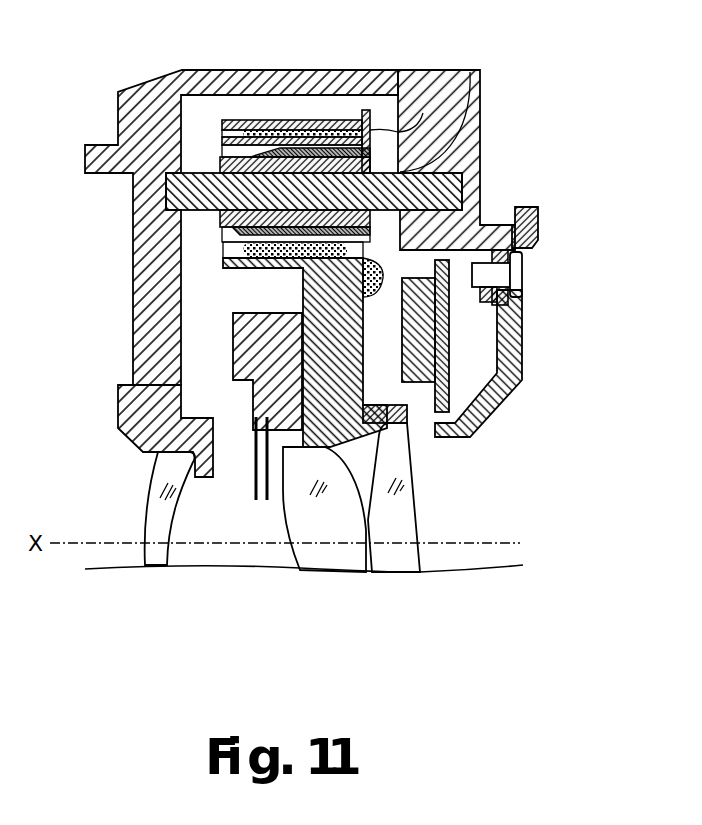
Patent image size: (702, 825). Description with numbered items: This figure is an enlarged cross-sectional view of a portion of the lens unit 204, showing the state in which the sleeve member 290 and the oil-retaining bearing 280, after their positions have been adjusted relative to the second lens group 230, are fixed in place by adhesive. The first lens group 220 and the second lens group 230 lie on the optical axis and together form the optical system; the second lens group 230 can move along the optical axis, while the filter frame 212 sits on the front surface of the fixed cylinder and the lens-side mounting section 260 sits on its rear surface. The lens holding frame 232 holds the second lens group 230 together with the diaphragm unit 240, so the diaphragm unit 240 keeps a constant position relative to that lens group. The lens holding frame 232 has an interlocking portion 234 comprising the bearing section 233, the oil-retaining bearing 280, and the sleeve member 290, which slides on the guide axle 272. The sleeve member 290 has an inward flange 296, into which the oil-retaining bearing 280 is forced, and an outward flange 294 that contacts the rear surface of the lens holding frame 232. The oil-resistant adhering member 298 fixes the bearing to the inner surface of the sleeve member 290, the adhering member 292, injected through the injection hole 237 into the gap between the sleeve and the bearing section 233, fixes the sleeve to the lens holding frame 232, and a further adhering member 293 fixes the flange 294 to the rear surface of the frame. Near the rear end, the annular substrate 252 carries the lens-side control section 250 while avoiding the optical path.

The lens unit 204 is at (68, 53).
The guide axle 272 is at (182, 144).
The filter frame 212 is at (110, 174).
The diaphragm unit 240 is at (253, 390).
The oil-retaining bearing 280 is at (482, 173).
The flange 294 is at (423, 113).
The oil-resistant adhering member 298 is at (470, 75).
The lens-side mounting section 260 is at (520, 207).
The annular substrate 252 is at (505, 405).
The lens-side control section 250 is at (449, 340).
The bearing section 233 is at (280, 272).
The lens holding frame 232 is at (408, 423).
The adhering member 293 is at (380, 272).
The sleeve member 290 is at (228, 120).
The interlocking portion 234 is at (262, 120).
The flange 296 is at (221, 148).
The adhering member 292 is at (295, 120).
The injection hole 237 is at (350, 120).
The first lens group 220 is at (143, 498).
The second lens group 230 is at (413, 507).